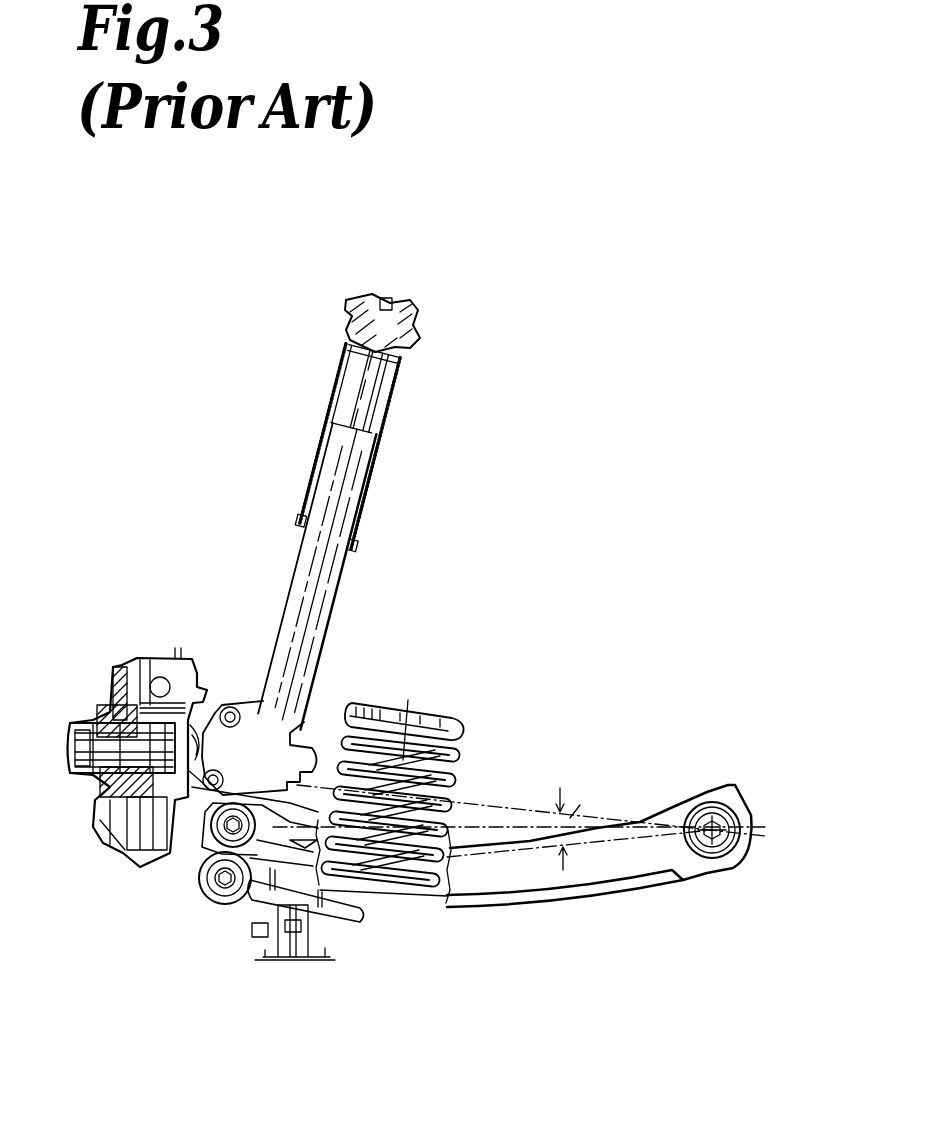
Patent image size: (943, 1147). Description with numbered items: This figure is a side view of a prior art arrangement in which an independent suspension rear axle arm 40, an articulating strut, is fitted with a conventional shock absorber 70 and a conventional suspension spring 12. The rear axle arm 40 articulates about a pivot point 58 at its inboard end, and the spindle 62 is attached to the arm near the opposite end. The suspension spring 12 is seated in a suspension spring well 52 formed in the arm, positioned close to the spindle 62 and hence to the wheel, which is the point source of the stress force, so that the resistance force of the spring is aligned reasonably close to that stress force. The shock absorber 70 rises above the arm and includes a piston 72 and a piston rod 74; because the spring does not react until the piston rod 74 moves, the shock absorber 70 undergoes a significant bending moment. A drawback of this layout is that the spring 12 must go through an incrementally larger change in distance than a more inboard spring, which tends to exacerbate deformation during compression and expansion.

The suspension spring 12 is at (458, 750).
The independent suspension rear axle arm 40 is at (537, 878).
The suspension spring well 52 is at (440, 897).
The pivot point 58 is at (720, 840).
The spindle 62 is at (97, 787).
The shock absorber 70 is at (292, 580).
The piston 72 is at (327, 617).
The piston rod 74 is at (360, 395).